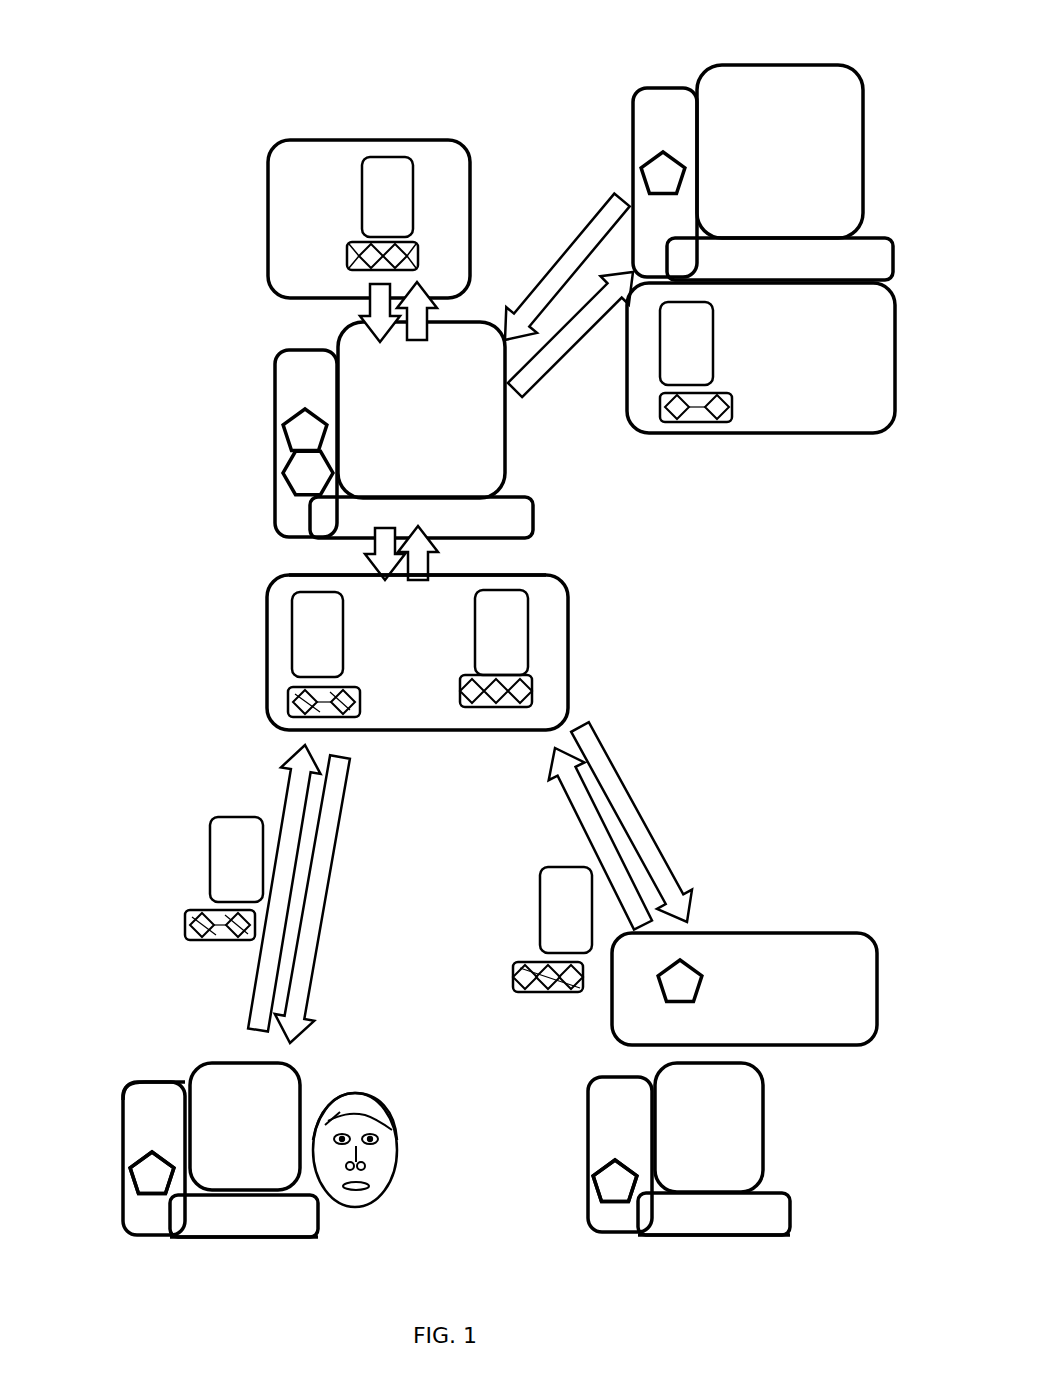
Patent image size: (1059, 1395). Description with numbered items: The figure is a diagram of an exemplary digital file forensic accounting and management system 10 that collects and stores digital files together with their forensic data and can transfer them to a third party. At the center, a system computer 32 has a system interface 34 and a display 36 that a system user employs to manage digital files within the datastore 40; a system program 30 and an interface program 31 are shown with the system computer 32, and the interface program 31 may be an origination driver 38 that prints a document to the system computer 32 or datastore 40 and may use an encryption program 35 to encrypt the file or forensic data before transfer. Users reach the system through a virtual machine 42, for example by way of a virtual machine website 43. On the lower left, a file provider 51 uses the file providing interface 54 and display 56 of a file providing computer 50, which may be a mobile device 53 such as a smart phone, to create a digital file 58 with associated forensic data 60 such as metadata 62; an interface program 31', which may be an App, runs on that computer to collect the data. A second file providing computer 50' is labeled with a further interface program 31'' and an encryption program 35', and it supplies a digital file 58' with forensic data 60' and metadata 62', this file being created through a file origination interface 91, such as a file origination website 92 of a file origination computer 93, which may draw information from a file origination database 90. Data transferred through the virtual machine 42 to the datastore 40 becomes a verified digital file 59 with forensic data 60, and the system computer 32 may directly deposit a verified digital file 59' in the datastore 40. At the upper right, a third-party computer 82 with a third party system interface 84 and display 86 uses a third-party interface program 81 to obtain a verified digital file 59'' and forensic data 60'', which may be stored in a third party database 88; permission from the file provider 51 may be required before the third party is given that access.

The digital file forensic accounting and management system 10 is at (205, 275).
The system program 30 is at (300, 437).
The interface program 31 is at (259, 472).
The interface program 31' is at (100, 1162).
The sensor 31'' is at (570, 1171).
The system computer 32 is at (293, 393).
The system interface 34 is at (500, 520).
The encryption program 35 is at (117, 1205).
The sensor element 35' is at (576, 1213).
The display 36 is at (470, 468).
The origination driver 38 is at (167, 1195).
The datastore 40 is at (298, 200).
The virtual machine 42 is at (540, 615).
The virtual machine website 43 is at (533, 580).
The file providing computer 50 is at (108, 1146).
The file providing computer 50' is at (580, 1154).
The file provider 51 is at (362, 1100).
The mobile device 53 is at (167, 1095).
The file providing interface 54 is at (233, 1222).
The display 56 is at (217, 1073).
The digital file 58 is at (179, 841).
The digital file 58' is at (507, 891).
The verified digital file 59 is at (413, 615).
The verified digital file 59' is at (446, 197).
The verified digital file 59'' is at (729, 343).
The forensic data 60 is at (219, 794).
The forensic data 60' is at (516, 826).
The forensic data 60'' is at (554, 387).
The metadata 62 is at (222, 836).
The metadata 62' is at (500, 1001).
The third-party interface program 81 is at (652, 175).
The third-party computer 82 is at (655, 135).
The third party system interface 84 is at (810, 260).
The display 86 is at (810, 143).
The third party database 88 is at (818, 400).
The file origination database 90 is at (752, 965).
The file origination interface 91 is at (683, 985).
The file origination website 92 is at (740, 955).
The file origination computer 93 is at (625, 1100).